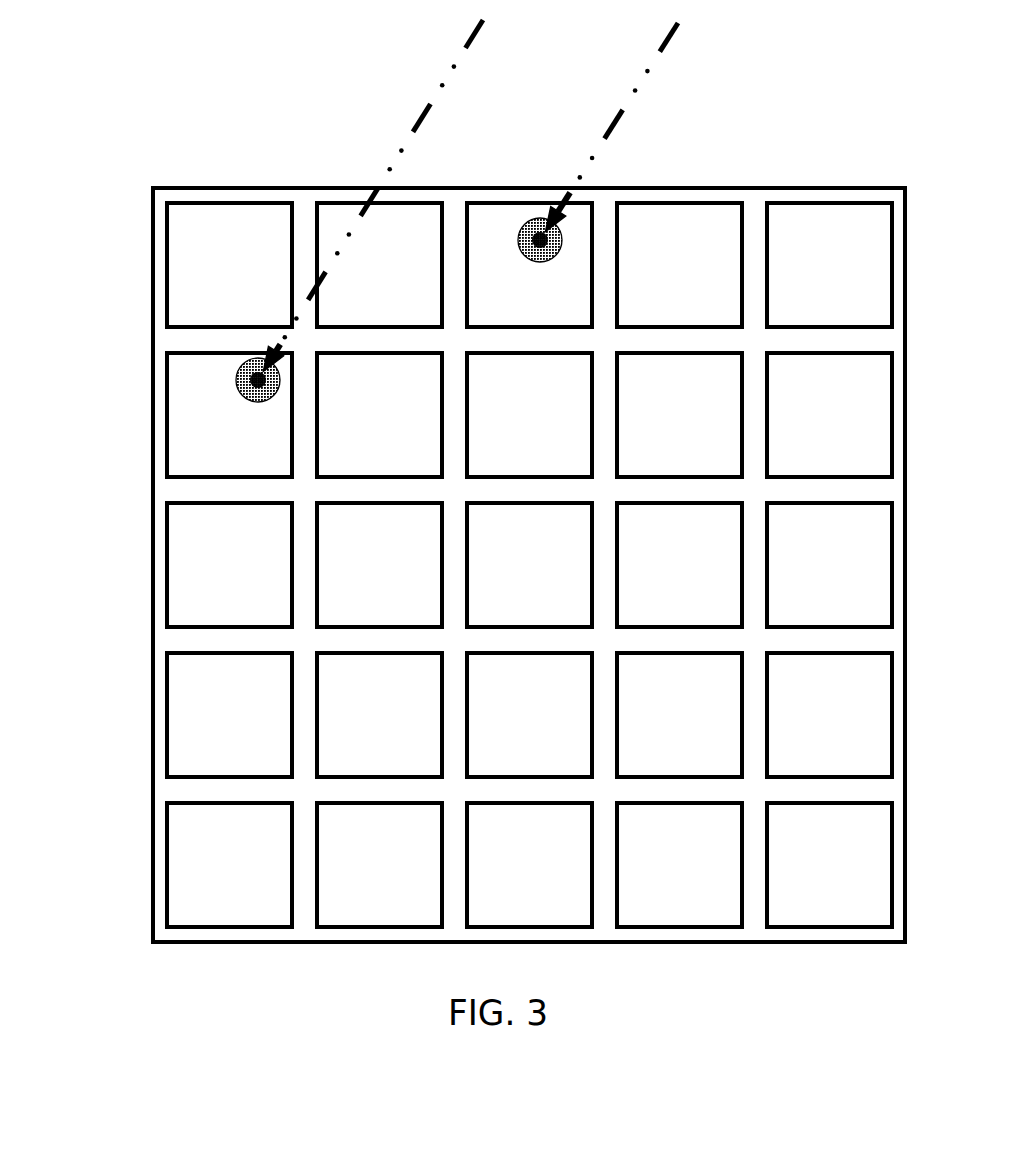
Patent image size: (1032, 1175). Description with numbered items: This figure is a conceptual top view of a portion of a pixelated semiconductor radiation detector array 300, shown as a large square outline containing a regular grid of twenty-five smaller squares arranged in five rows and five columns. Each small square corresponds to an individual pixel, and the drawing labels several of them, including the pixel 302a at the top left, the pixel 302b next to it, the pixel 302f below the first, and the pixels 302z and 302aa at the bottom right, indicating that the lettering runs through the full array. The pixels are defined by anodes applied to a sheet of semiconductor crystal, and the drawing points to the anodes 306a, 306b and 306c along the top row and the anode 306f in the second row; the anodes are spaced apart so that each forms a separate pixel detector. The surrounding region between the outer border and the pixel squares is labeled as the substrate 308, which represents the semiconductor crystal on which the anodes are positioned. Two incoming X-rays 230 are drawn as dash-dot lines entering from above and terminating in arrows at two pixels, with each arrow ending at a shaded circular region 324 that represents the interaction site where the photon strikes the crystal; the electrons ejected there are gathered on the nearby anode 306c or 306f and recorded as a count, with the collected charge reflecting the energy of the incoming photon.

The sample carrier / chip array 300 is at (487, 527).
The sample well / region a 302a is at (202, 277).
The sample well / region b 302b is at (352, 277).
The sample well / region f 302f is at (205, 441).
The sample well / region z 302z is at (707, 877).
The sample well / region aa 302aa is at (865, 877).
The cell / pad a 306a is at (226, 225).
The cell / pad b 306b is at (346, 225).
The cell / pad c 306c is at (514, 226).
The cell / pad f 306f is at (176, 415).
The substrate / frame 308 is at (473, 527).
The laser spot / irradiated area 324 is at (336, 310).
The laser beam 230 is at (482, 196).